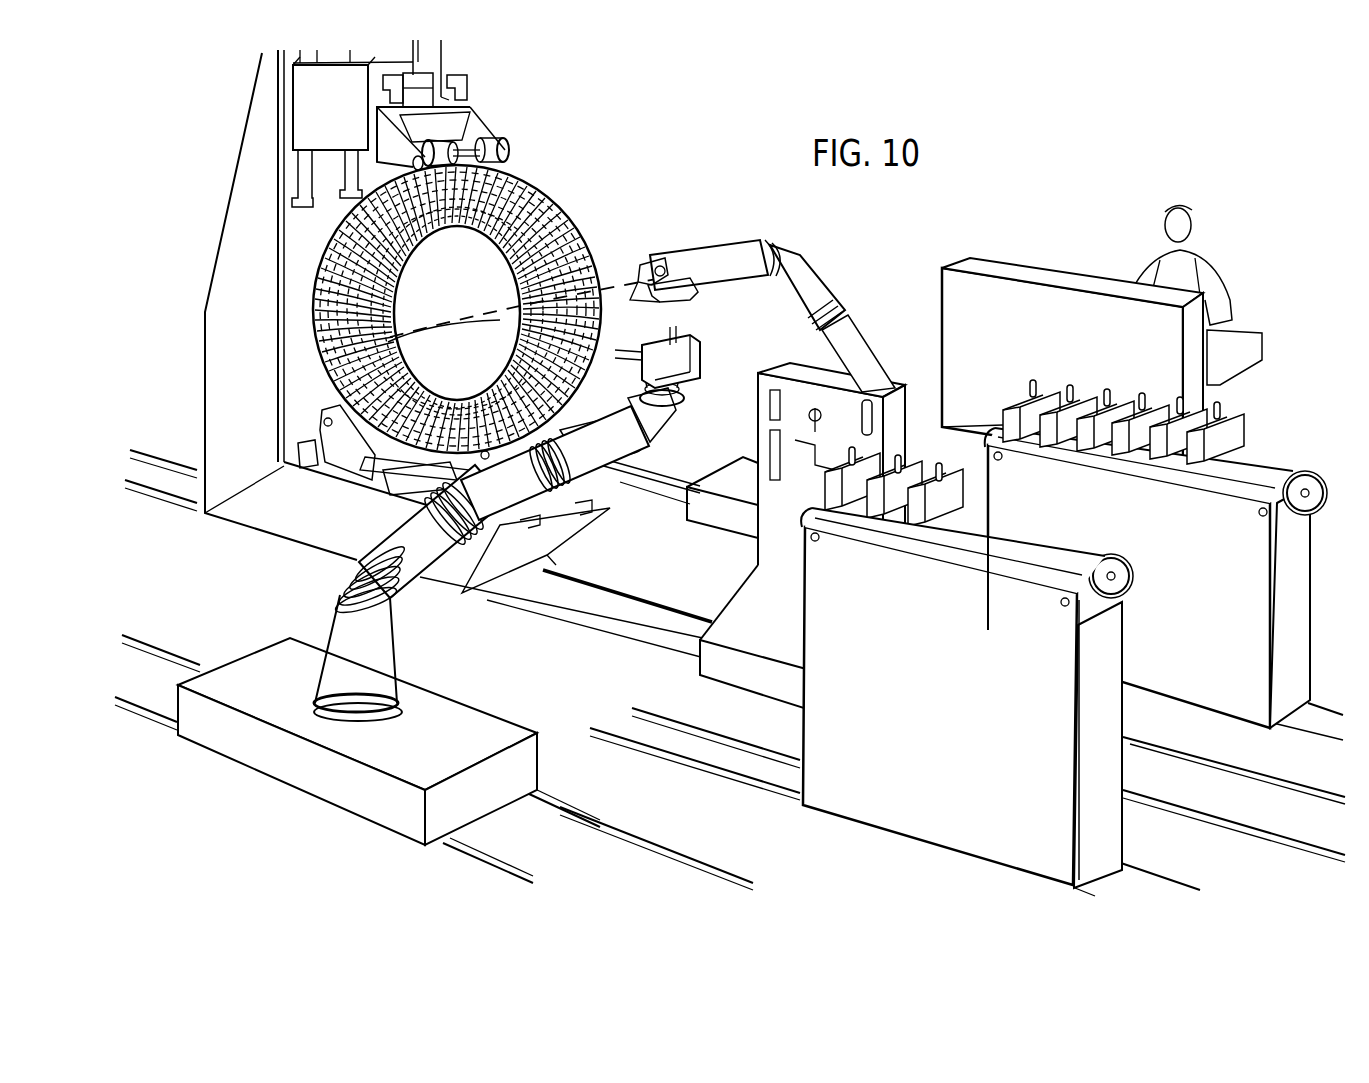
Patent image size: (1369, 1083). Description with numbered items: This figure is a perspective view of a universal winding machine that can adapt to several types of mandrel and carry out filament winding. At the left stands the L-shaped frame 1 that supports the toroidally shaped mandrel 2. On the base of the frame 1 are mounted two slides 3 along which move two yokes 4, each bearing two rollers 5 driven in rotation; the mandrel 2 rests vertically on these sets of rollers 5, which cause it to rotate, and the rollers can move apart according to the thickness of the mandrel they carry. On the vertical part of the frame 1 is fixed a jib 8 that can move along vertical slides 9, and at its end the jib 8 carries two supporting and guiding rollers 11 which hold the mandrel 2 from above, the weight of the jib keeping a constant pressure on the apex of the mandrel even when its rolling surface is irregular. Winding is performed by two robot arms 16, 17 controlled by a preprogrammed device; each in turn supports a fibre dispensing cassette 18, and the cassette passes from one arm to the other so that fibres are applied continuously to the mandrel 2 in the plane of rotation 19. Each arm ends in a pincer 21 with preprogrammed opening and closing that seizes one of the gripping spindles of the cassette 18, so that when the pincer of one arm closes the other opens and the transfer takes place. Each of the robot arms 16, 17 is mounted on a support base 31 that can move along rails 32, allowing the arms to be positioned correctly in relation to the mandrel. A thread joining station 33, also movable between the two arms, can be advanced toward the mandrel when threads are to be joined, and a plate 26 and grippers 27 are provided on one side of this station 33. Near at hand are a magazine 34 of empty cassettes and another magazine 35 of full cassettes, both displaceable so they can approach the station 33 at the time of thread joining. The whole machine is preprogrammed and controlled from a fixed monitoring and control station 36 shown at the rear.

The L-shaped frame 1 is at (730, 473).
The mandrel 2 is at (555, 190).
The slides 3 is at (405, 490).
The yokes 4 is at (325, 445).
The rollers 5 is at (328, 398).
The jib 8 is at (328, 114).
The vertical slides 9 is at (305, 170).
The supporting and guiding rollers 11 is at (505, 145).
The robot arm 16 is at (600, 440).
The robot arm 17 is at (730, 252).
The fibre dispensing cassette 18 is at (705, 355).
The plane of rotation 19 is at (420, 310).
The pincer 21 is at (698, 401).
The plate 26 is at (762, 455).
The grippers 27 is at (872, 400).
The support base 31 is at (478, 720).
The rails 32 is at (655, 497).
The thread joining station 33 is at (745, 680).
The magazine of empty cassettes 34 is at (958, 835).
The magazine of full cassettes 35 is at (1205, 700).
The monitoring and control station 36 is at (1025, 258).